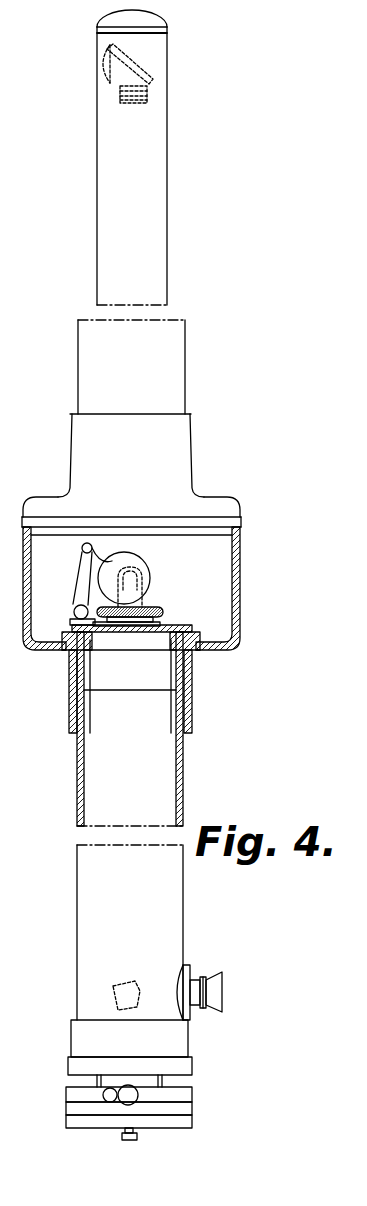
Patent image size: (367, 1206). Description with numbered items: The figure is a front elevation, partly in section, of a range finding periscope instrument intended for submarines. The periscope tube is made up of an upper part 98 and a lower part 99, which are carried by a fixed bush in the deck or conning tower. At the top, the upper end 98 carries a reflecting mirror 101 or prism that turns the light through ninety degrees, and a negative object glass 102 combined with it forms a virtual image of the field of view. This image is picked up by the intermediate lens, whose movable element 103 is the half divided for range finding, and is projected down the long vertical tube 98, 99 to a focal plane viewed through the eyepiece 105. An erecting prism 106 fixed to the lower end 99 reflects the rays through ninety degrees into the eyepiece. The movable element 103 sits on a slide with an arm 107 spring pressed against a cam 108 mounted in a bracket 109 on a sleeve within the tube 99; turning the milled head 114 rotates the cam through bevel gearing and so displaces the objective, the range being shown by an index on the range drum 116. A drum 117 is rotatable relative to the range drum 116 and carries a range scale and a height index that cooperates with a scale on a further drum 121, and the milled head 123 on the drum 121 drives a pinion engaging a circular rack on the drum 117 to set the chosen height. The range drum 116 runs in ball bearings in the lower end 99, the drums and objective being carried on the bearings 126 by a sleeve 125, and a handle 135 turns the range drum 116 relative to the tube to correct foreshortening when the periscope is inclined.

The upper part of the periscope tube 98 is at (176, 362).
The lower part of the periscope tube 99 is at (155, 729).
The reflecting mirror 101 is at (136, 64).
The negative object glass 102 is at (150, 97).
The movable element of the range finder objective 103 is at (163, 613).
The eyepiece 105 is at (222, 991).
The erecting prism 106 is at (115, 998).
The arm 107 is at (82, 580).
The cam 108 is at (143, 566).
The bracket 109 is at (144, 598).
The milled head 114 is at (107, 1088).
The range drum 116 is at (178, 1093).
The drum 117 is at (185, 1108).
The drum 121 is at (182, 1122).
The milled head 123 is at (137, 1137).
The sleeve 125 is at (176, 752).
The bearings 126 is at (188, 650).
The handle 135 is at (128, 1085).